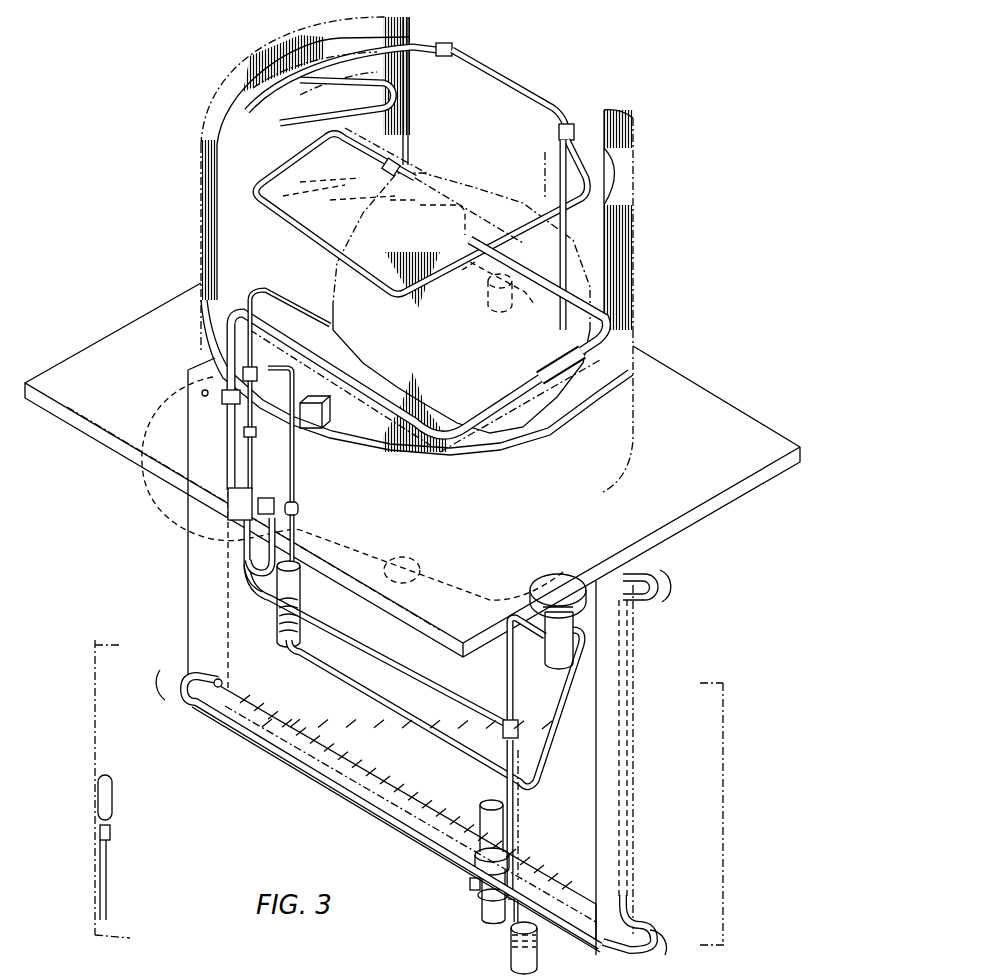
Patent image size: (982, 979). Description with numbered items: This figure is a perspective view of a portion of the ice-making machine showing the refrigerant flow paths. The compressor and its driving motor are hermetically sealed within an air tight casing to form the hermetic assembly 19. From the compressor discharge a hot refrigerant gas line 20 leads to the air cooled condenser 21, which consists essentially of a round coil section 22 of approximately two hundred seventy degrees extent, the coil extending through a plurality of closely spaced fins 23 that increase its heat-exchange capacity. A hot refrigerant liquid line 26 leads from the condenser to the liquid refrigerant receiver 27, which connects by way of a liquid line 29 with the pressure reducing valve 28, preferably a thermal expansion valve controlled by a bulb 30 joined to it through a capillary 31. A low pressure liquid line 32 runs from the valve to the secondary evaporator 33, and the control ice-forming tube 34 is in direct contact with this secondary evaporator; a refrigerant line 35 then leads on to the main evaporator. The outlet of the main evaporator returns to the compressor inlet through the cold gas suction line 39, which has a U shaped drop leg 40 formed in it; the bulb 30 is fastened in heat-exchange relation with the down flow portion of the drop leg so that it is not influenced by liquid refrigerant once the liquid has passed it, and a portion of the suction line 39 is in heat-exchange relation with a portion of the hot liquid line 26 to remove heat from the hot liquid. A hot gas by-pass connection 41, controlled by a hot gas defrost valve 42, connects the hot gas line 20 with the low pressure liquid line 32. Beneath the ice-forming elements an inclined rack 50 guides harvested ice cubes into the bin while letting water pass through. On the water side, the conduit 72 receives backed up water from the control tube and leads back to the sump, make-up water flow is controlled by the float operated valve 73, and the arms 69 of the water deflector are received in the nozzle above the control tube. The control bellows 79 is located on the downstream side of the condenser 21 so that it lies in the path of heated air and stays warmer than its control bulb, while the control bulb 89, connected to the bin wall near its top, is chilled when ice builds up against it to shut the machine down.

The hermetic assembly 19 is at (376, 324).
The hot refrigerant gas line 20 is at (518, 85).
The air cooled condenser 21 is at (643, 218).
The round coil section 22 is at (427, 55).
The fins 23 is at (618, 118).
The hot refrigerant liquid line 26 is at (455, 205).
The liquid refrigerant receiver 27 is at (292, 590).
The pressure reducing valve 28 is at (562, 652).
The liquid line 29 is at (470, 737).
The bulb 30 is at (287, 500).
The capillary 31 is at (445, 583).
The low pressure liquid line 32 is at (512, 757).
The secondary evaporator 33 is at (508, 863).
The control ice-forming tube 34 is at (505, 838).
The refrigerant line 35 is at (307, 772).
The cold gas suction line 39 is at (232, 313).
The U shaped drop leg 40 is at (270, 605).
The hot gas by-pass connection 41 is at (561, 195).
The hot gas defrost valve 42 is at (497, 305).
The inclined rack 50 is at (347, 757).
The arms 69 is at (530, 962).
The conduit 72 is at (240, 505).
The valve 73 is at (166, 508).
The bellows 79 is at (320, 415).
The control bulb 89 is at (112, 790).